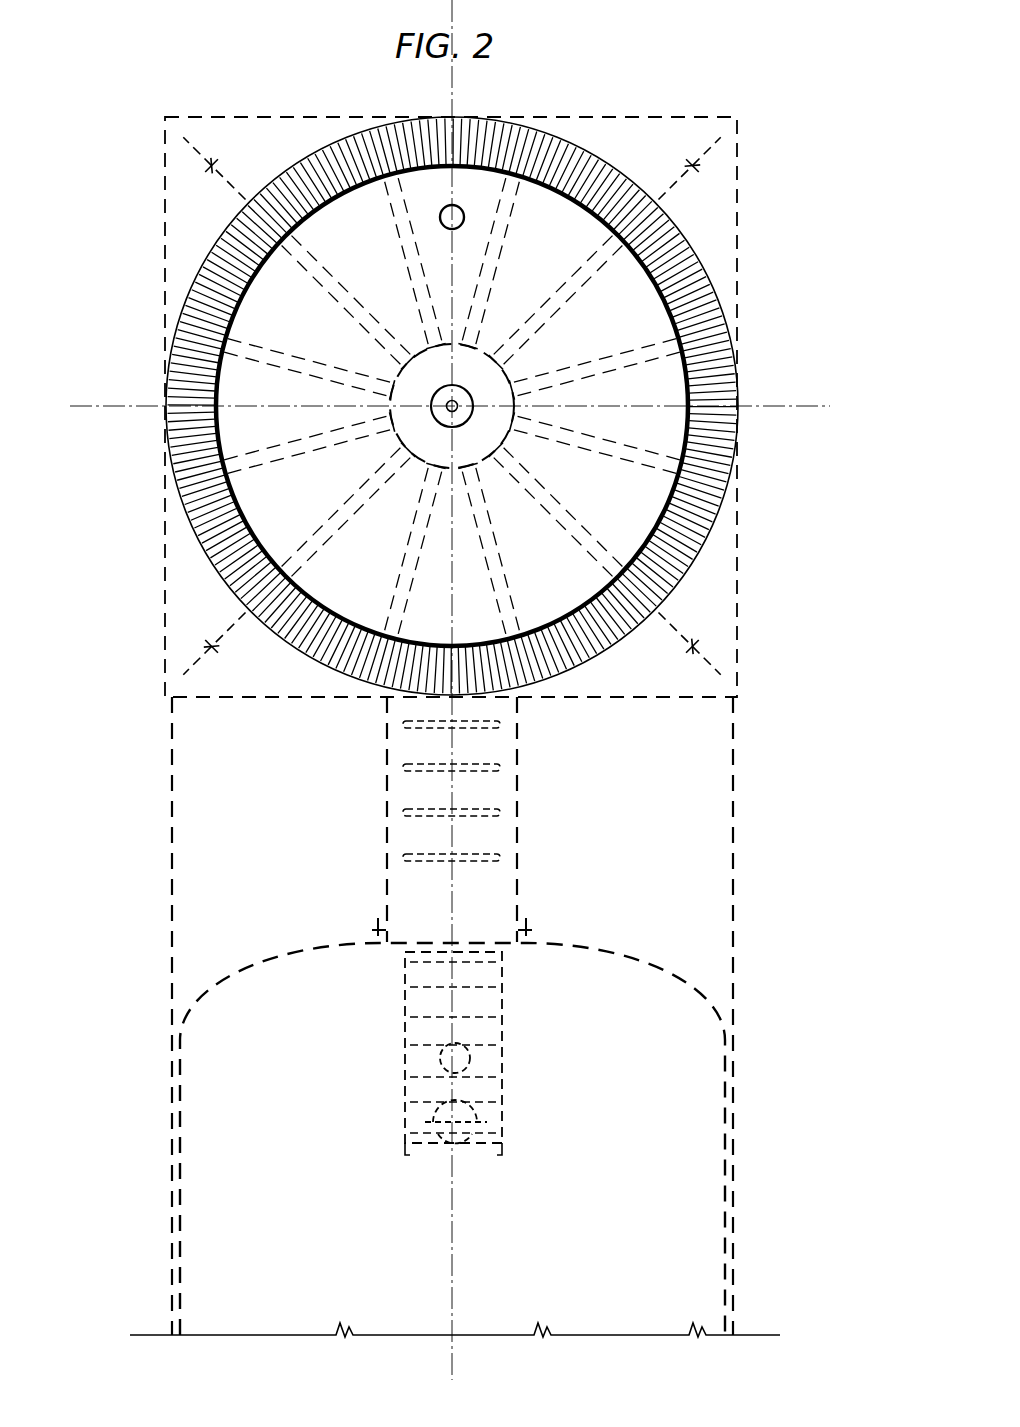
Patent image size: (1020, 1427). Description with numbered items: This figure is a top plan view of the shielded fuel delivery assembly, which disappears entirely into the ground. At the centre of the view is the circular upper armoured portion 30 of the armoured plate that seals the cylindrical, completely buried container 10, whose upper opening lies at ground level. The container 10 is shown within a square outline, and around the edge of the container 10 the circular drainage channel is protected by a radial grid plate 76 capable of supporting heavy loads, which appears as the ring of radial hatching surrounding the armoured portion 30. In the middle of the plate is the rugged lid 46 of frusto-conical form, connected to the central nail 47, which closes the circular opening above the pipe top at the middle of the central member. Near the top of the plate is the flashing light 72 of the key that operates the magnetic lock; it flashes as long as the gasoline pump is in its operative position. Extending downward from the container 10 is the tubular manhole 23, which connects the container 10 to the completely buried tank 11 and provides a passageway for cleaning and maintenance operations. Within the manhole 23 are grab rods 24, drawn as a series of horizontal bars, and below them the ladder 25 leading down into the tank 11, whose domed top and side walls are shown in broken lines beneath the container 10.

The container 10 is at (740, 235).
The tank 11 is at (683, 1172).
The tubular manhole 23 is at (402, 897).
The grab rods 24 is at (477, 770).
The ladder 25 is at (458, 1003).
The upper armoured portion 30 is at (568, 583).
The lid 46 is at (449, 412).
The central nail 47 is at (447, 402).
The flashing light 72 is at (461, 222).
The radial grid plate 76 is at (300, 625).